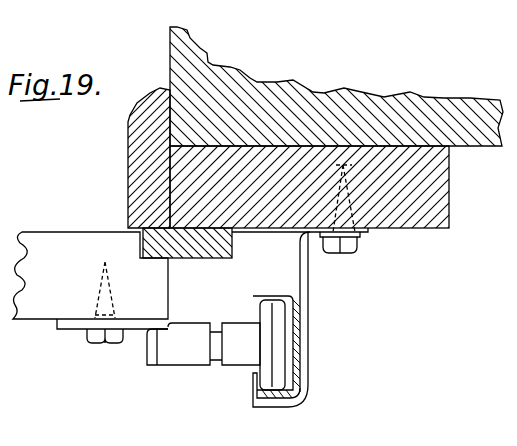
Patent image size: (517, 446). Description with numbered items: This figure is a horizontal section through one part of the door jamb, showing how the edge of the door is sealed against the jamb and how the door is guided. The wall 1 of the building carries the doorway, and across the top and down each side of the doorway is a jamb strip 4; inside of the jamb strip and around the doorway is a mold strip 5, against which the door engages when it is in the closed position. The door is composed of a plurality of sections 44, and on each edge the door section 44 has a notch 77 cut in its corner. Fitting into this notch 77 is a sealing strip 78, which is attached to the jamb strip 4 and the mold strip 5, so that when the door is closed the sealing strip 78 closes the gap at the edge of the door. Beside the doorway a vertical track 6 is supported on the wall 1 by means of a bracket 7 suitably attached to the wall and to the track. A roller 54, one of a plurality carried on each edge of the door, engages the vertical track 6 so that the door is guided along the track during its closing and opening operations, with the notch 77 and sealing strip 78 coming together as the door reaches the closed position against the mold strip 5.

The wall 1 is at (452, 112).
The jamb strip 4 is at (440, 184).
The mold strip 5 is at (128, 157).
The vertical track 6 is at (275, 296).
The bracket 7 is at (309, 290).
The door section 44 is at (43, 246).
The roller 54 is at (260, 312).
The notch 77 is at (140, 245).
The sealing strip 78 is at (207, 258).